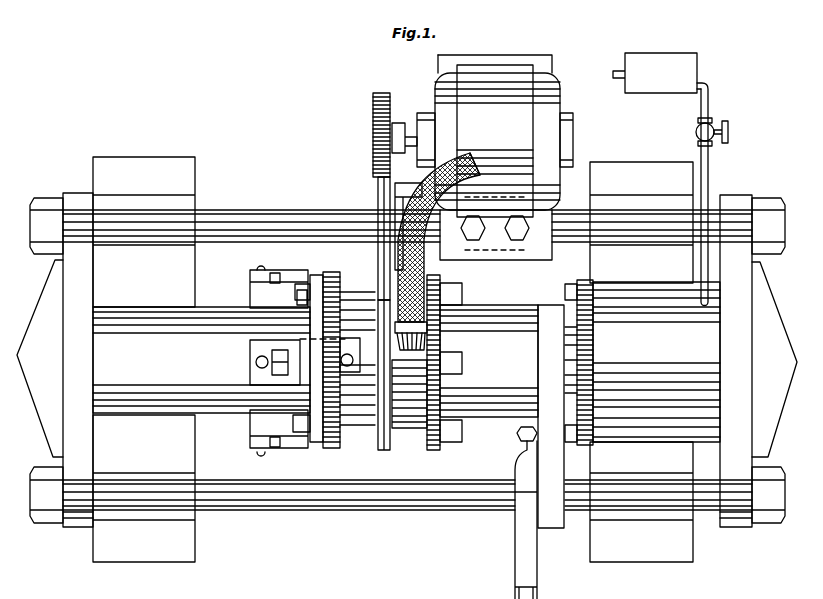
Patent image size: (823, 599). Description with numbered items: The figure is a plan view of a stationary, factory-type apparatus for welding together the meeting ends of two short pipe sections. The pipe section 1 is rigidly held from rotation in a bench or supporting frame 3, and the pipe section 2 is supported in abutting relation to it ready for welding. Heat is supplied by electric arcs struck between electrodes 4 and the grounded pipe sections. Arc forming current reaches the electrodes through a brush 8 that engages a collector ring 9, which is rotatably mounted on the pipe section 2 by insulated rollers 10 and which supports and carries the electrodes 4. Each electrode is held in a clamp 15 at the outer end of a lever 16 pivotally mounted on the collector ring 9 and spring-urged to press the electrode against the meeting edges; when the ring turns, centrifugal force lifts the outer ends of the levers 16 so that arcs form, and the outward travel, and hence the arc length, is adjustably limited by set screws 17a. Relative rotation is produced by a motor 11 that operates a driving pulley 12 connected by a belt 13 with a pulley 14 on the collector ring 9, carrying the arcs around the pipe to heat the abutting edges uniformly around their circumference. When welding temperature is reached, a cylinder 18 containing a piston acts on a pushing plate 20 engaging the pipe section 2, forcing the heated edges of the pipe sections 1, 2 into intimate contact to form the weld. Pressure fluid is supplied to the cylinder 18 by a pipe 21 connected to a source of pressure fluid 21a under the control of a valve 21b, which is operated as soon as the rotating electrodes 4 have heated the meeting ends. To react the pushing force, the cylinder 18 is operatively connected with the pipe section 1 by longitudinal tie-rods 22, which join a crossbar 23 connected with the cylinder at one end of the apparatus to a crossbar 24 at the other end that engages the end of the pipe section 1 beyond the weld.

The pipe section 1 is at (206, 317).
The pipe section 2 is at (498, 312).
The bench or supporting frame 3 is at (146, 553).
The electrodes 4 is at (264, 270).
The brush 8 is at (437, 259).
The collector ring 9 is at (418, 428).
The insulated rollers 10 is at (322, 277).
The motor 11 is at (542, 101).
The driving pulley 12 is at (373, 137).
The belt 13 is at (378, 190).
The pulley 14 is at (396, 436).
The clamp 15 is at (250, 352).
The lever 16 is at (255, 296).
The set screws 17a is at (349, 353).
The cylinder 18 is at (646, 285).
The pushing plate 20 is at (549, 305).
The pipe 21 is at (709, 192).
The source of pressure fluid 21a is at (655, 73).
The valve 21b is at (729, 132).
The tie-rods 22 is at (276, 210).
The crossbar 23 is at (735, 522).
The crossbar 24 is at (82, 522).